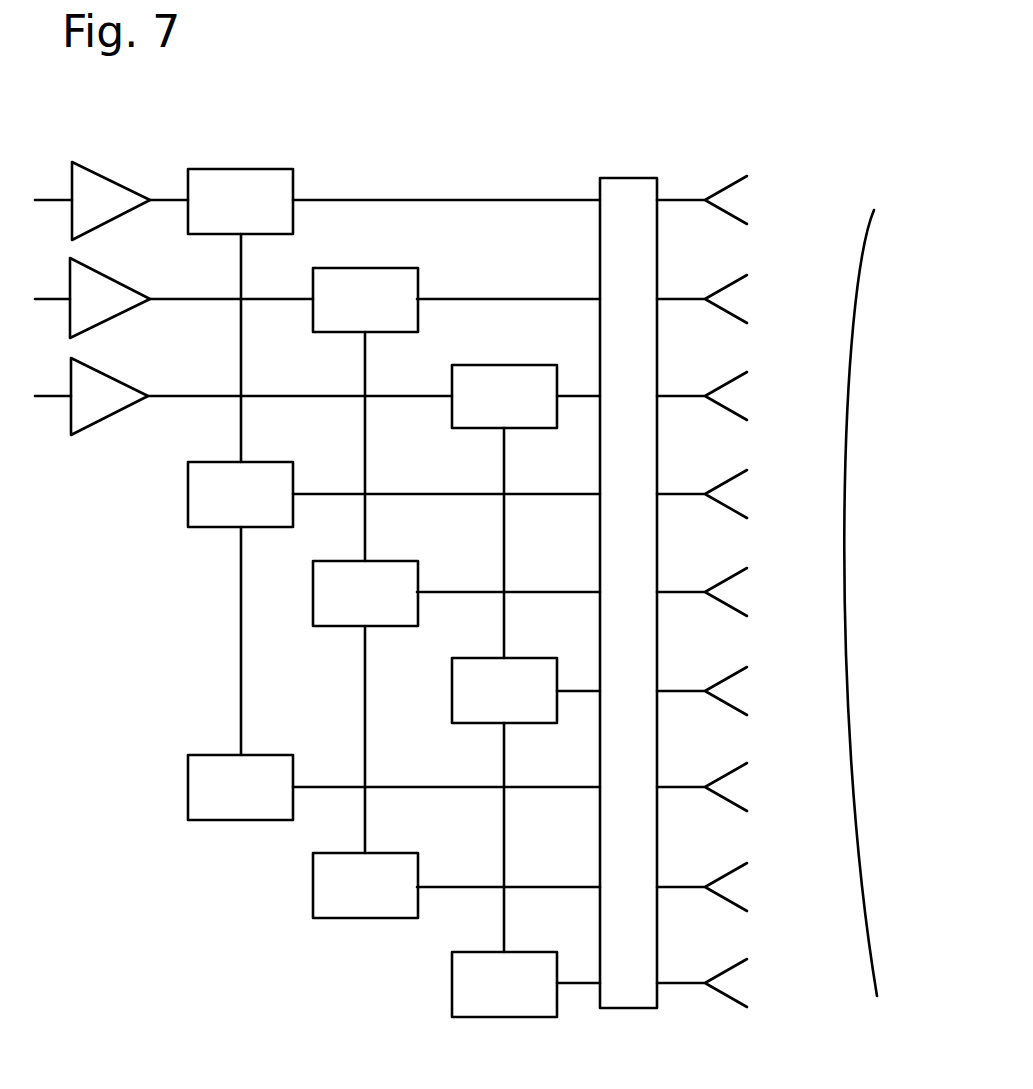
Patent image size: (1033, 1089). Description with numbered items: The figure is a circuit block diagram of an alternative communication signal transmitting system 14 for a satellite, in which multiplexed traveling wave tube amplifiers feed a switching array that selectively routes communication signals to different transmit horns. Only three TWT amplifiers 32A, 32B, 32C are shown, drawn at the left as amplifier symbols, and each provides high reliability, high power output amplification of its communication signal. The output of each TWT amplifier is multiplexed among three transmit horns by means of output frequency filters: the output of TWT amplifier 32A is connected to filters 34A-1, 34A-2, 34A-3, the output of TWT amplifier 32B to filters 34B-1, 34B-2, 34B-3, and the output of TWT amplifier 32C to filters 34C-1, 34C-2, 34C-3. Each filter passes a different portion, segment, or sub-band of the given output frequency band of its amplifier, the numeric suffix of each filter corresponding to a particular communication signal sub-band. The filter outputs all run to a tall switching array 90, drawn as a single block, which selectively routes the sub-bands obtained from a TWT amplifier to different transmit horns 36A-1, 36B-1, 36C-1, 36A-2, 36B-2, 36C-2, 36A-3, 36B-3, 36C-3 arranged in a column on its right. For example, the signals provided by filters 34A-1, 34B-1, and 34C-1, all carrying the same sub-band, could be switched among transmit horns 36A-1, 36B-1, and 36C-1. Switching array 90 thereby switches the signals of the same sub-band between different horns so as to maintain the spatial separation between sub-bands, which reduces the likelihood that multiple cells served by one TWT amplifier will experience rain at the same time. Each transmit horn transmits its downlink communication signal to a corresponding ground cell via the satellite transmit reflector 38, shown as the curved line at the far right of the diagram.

The communication signal transmitting system 14 is at (484, 124).
The TWT amplifier 32A is at (93, 170).
The TWT amplifier 32B is at (122, 303).
The TWT amplifier 32C is at (115, 402).
The output frequency filter 34A-1 is at (263, 168).
The output frequency filter 34B-1 is at (390, 284).
The output frequency filter 34C-1 is at (548, 382).
The output frequency filter 34A-2 is at (284, 478).
The output frequency filter 34B-2 is at (401, 580).
The output frequency filter 34C-2 is at (541, 676).
The output frequency filter 34A-3 is at (276, 766).
The output frequency filter 34B-3 is at (407, 872).
The output frequency filter 34C-3 is at (550, 970).
The switching array 90 is at (616, 177).
The transmit horn 36A-1 is at (722, 190).
The transmit horn 36B-1 is at (722, 289).
The transmit horn 36C-1 is at (722, 386).
The transmit horn 36A-2 is at (722, 484).
The transmit horn 36B-2 is at (722, 582).
The transmit horn 36C-2 is at (722, 681).
The transmit horn 36A-3 is at (722, 777).
The transmit horn 36B-3 is at (722, 877).
The transmit horn 36C-3 is at (722, 973).
The satellite transmit reflector 38 is at (884, 206).